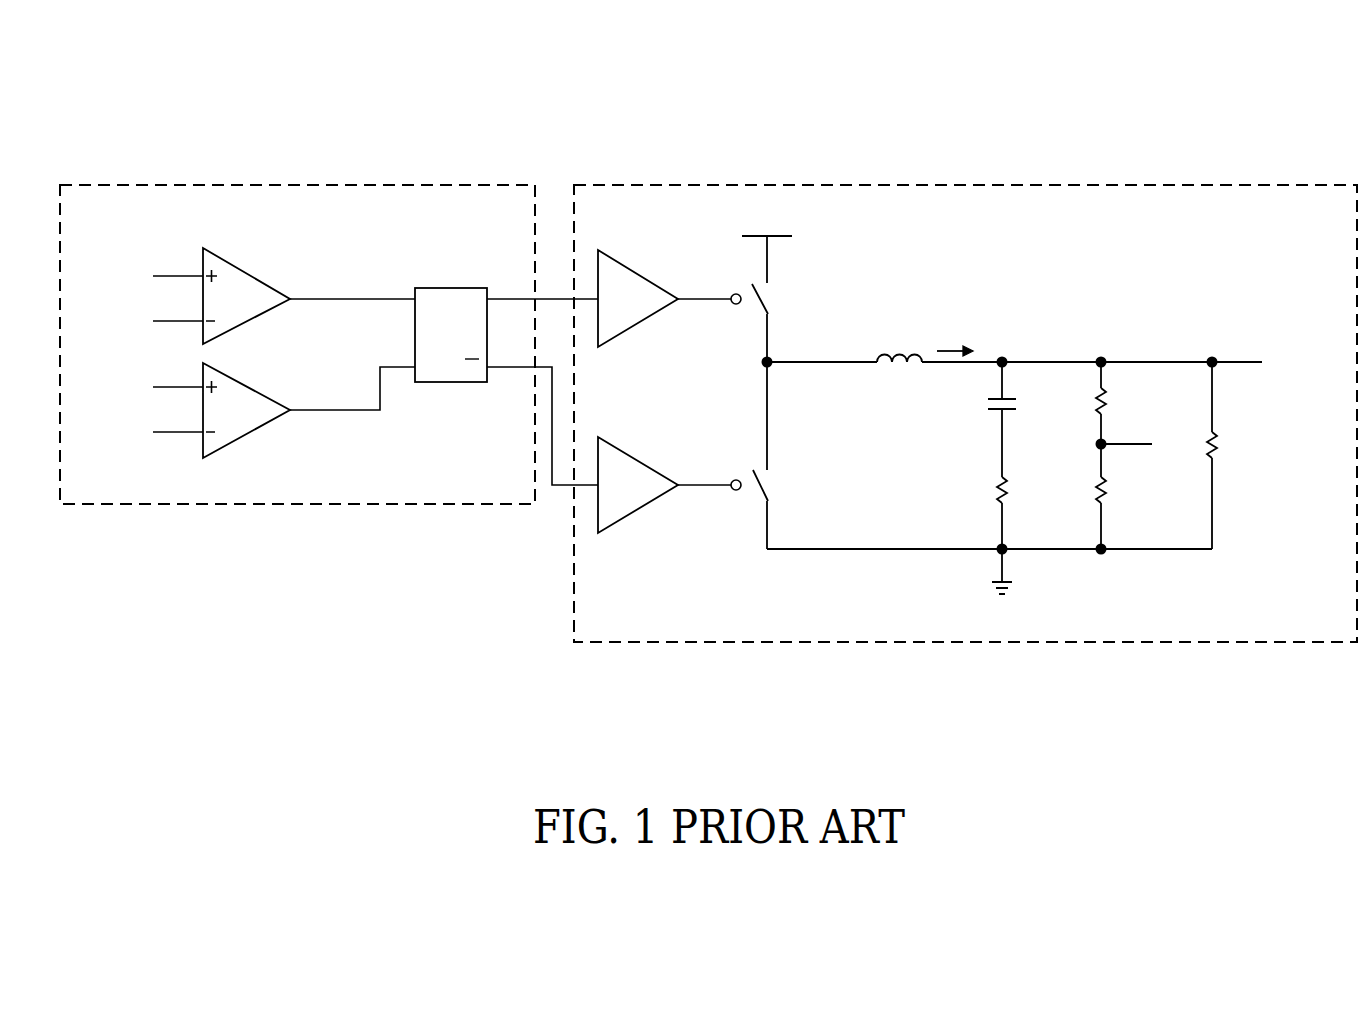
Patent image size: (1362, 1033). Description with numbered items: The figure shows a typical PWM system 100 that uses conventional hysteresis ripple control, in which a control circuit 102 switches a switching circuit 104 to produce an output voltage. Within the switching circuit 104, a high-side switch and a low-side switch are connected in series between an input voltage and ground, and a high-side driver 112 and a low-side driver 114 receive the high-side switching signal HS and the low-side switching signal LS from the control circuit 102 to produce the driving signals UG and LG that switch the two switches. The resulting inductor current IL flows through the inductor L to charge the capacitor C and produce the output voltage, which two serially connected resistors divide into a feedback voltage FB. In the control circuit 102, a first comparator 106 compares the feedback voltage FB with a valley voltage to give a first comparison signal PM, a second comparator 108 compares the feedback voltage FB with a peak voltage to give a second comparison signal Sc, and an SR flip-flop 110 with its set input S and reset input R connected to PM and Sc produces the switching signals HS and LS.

The PWM system 100 is at (1286, 100).
The control circuit 102 is at (300, 185).
The switching circuit 104 is at (963, 185).
The first comparator 106 is at (260, 271).
The second comparator 108 is at (260, 387).
The SR flip-flop 110 is at (448, 288).
The high-side driver 112 is at (642, 276).
The low-side driver 114 is at (642, 462).